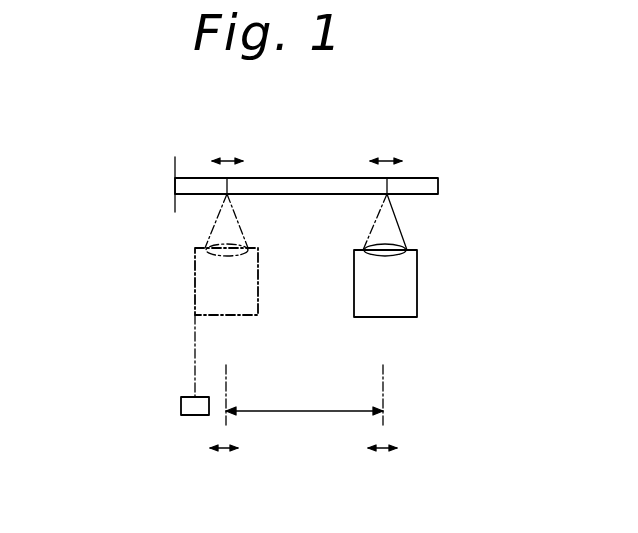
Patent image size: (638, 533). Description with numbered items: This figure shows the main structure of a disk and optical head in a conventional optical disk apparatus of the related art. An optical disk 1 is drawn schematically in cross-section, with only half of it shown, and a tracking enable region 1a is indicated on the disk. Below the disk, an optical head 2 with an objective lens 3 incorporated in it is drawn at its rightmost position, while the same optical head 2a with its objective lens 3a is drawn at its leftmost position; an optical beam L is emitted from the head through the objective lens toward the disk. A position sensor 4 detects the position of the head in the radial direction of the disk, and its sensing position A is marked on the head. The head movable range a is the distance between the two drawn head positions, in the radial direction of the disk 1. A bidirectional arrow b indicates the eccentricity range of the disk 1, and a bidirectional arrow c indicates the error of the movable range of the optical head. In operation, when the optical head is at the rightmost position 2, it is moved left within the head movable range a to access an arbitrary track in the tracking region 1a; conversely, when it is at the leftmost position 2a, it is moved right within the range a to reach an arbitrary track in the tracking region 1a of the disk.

The optical disk 1 is at (440, 182).
The tracking enable region 1a is at (292, 183).
The optical head 2 is at (405, 318).
The optical head 2a is at (195, 267).
The objective lens 3 is at (402, 263).
The objective lens 3a is at (210, 233).
The position sensor 4 is at (181, 403).
The sensing position A is at (194, 335).
The optical beam L is at (400, 222).
The head movable range a is at (304, 403).
The eccentricity range b is at (307, 147).
The error of the movable range c is at (303, 465).